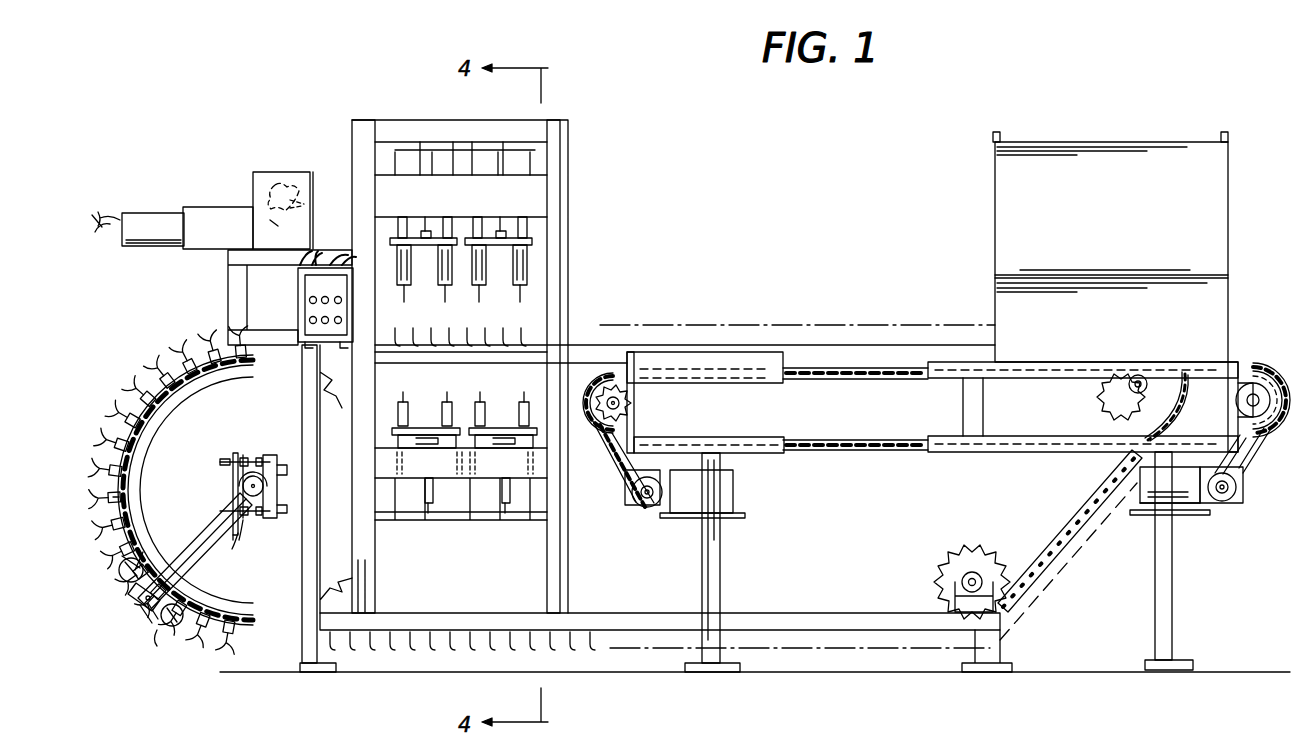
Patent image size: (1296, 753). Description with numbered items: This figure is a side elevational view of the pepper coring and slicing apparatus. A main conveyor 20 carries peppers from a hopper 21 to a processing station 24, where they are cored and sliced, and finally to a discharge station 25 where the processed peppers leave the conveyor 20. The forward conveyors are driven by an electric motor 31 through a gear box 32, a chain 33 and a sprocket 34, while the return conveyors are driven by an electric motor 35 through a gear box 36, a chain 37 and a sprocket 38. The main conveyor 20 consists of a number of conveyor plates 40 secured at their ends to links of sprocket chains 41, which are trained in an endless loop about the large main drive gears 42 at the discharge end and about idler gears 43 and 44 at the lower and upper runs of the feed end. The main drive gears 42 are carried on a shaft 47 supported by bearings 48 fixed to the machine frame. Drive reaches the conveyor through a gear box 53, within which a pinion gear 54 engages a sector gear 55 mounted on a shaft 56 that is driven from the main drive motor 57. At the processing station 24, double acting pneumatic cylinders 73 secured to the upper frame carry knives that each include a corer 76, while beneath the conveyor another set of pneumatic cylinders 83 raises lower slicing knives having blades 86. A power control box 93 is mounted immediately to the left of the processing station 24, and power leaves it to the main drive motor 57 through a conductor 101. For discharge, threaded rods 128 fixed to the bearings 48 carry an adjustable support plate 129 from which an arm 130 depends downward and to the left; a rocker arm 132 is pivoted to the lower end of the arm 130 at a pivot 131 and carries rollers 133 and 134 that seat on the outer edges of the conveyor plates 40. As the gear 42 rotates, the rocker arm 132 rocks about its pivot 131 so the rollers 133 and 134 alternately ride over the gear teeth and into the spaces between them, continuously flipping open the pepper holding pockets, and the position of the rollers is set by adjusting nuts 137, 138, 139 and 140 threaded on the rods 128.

The main conveyor 20 is at (608, 323).
The hopper 21 is at (995, 214).
The processing station 24 is at (566, 160).
The discharge station 25 is at (136, 597).
The electric motor 31 is at (676, 520).
The gear box 32 is at (627, 506).
The chain 33 is at (617, 472).
The sprocket 34 is at (598, 428).
The electric motor 35 is at (1148, 505).
The gear box 36 is at (1242, 495).
The chain 37 is at (1248, 462).
The sprocket 38 is at (1258, 370).
The conveyor plates 40 is at (164, 368).
The sprocket chains 41 is at (1084, 501).
The main drive gears 42 is at (114, 497).
The idler gear 43 is at (978, 530).
The idler gear 44 is at (1121, 406).
The shaft 47 is at (243, 483).
The bearings 48 is at (272, 520).
The gear box 53 is at (258, 172).
The pinion gear 54 is at (269, 232).
The sector gear 55 is at (305, 205).
The shaft 56 is at (283, 175).
The main drive motor 57 is at (230, 205).
The double acting pneumatic cylinders 73 is at (487, 150).
The corer 76 is at (461, 259).
The pneumatic cylinders 83 is at (497, 519).
The blades 86 is at (513, 398).
The power control box 93 is at (298, 289).
The conductor 101 is at (102, 210).
The threaded rods 128 is at (256, 525).
The support plate 129 is at (234, 456).
The arm 130 is at (196, 538).
The pivot 131 is at (140, 602).
The rocker arm 132 is at (126, 576).
The roller 133 is at (128, 556).
The roller 134 is at (170, 626).
The adjusting nut 137 is at (244, 456).
The adjusting nut 138 is at (224, 459).
The adjusting nut 139 is at (240, 542).
The adjusting nut 140 is at (230, 534).